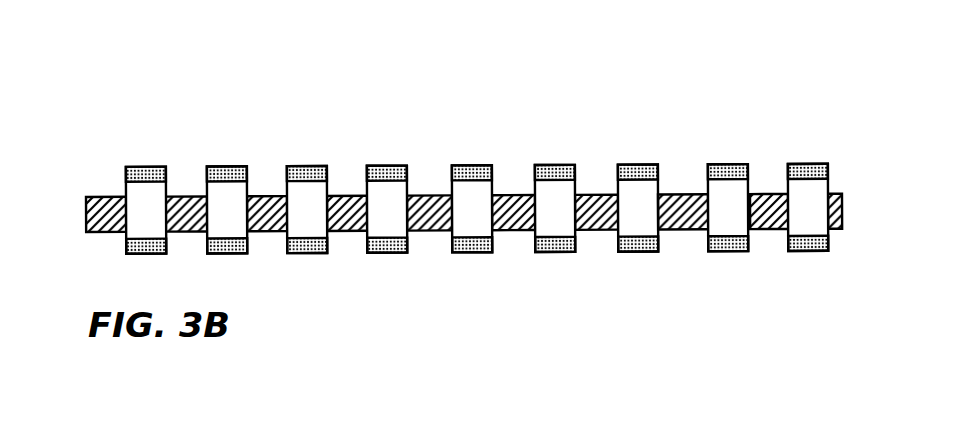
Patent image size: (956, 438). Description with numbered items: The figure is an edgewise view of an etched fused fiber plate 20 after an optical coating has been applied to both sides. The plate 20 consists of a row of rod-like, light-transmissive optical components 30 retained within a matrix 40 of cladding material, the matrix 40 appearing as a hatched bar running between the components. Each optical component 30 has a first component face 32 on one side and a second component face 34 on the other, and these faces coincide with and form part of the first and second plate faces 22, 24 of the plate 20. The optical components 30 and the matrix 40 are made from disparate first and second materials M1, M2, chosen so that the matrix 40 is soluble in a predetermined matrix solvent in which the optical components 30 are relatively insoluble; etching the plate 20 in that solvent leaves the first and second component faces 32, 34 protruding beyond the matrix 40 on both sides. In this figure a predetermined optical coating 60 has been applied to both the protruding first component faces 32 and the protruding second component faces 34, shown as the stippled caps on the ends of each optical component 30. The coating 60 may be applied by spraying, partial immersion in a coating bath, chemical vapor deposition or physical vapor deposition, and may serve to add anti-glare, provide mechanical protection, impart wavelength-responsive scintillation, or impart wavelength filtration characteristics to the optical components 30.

The fused fiber plate 20 is at (136, 150).
The optical coating 60 is at (303, 167).
The first component face 32 is at (457, 168).
The optical component 30 is at (473, 168).
The second component face 34 is at (472, 251).
The first plate face 22 is at (542, 168).
The second plate face 24 is at (547, 251).
The matrix 40 is at (754, 195).
The first material M1 is at (488, 102).
The second material M2 is at (747, 103).